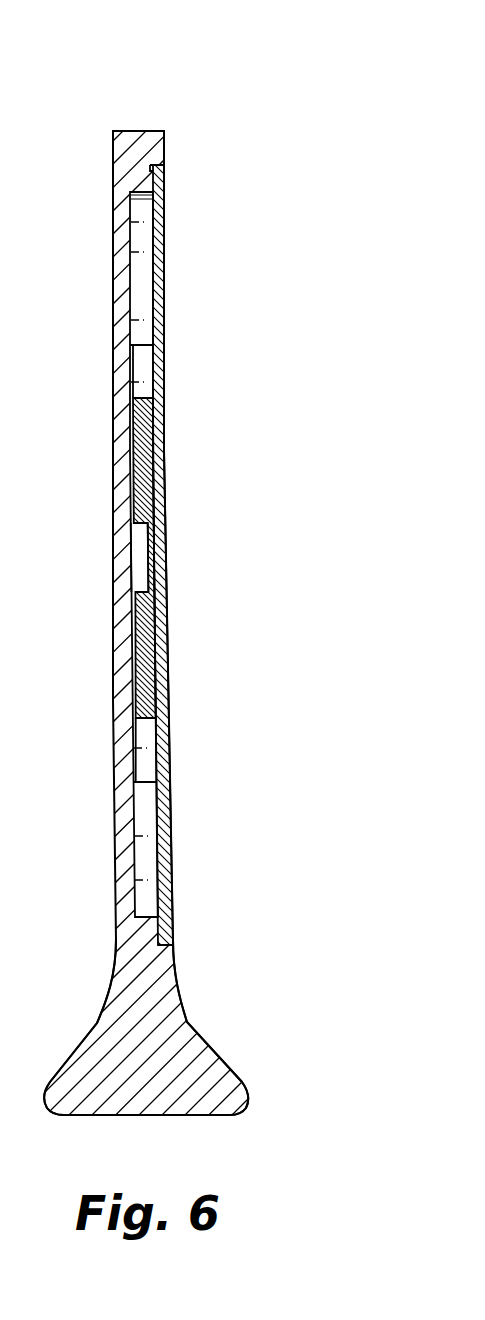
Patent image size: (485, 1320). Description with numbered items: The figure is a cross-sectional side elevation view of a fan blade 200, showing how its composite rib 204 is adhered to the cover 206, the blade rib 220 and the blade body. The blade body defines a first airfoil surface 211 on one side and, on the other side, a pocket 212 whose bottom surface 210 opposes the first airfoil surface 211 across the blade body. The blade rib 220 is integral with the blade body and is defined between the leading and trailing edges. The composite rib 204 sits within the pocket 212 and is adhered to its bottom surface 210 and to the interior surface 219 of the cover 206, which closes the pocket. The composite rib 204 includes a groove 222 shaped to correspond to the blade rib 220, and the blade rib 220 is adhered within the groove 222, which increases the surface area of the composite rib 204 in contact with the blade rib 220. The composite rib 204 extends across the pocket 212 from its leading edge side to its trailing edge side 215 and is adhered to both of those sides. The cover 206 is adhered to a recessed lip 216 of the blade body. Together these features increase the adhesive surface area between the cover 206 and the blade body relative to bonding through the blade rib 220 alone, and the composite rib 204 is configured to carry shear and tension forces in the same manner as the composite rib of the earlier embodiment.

The fan blade 200 is at (167, 653).
The composite rib 204 is at (109, 157).
The cover 206 is at (176, 658).
The bottom surface 210 is at (138, 291).
The first airfoil surface 211 is at (113, 368).
The pocket 212 is at (146, 263).
The trailing edge side 215 is at (134, 236).
The sleeve end 216 is at (158, 177).
The interior surface 219 is at (119, 936).
The blade rib 220 is at (142, 566).
The groove 222 is at (144, 551).